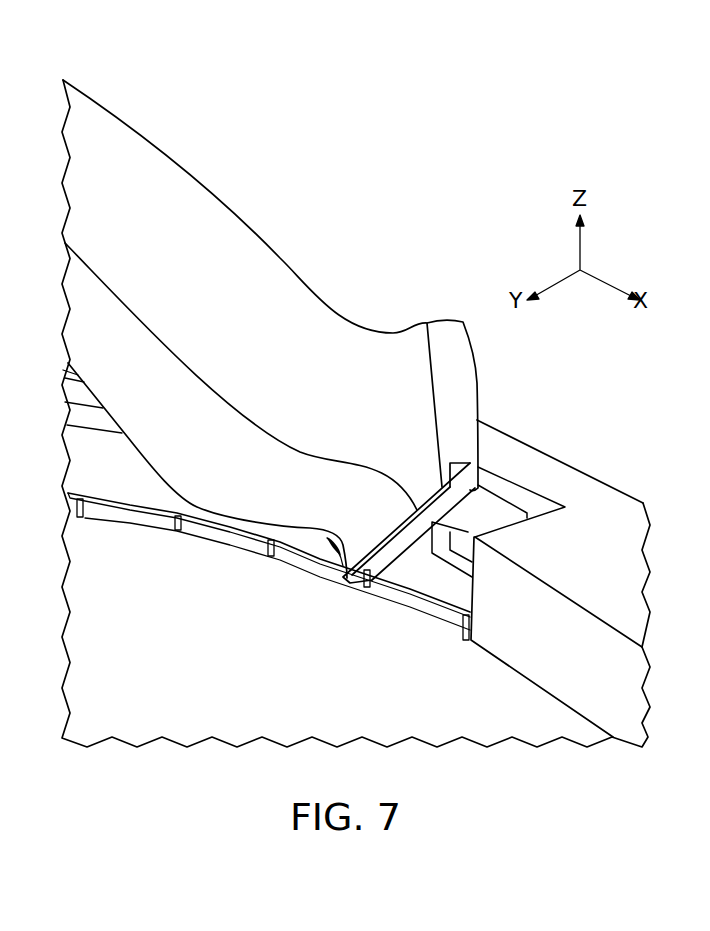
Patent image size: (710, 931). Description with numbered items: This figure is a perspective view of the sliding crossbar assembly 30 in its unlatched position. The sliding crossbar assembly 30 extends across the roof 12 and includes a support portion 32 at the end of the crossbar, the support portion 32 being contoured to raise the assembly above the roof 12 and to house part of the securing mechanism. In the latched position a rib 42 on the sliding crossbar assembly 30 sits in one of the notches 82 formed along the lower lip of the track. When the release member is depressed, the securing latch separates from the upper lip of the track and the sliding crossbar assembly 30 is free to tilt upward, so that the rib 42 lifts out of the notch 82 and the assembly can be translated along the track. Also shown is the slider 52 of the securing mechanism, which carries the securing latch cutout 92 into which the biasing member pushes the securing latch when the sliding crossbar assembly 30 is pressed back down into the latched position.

The sliding crossbar assembly 30 is at (166, 132).
The support portion 32 is at (212, 193).
The roof 12 is at (578, 482).
The securing latch cutout 92 is at (462, 543).
The slider 52 is at (432, 588).
The rib 42 is at (347, 584).
The notches 82 is at (84, 512).